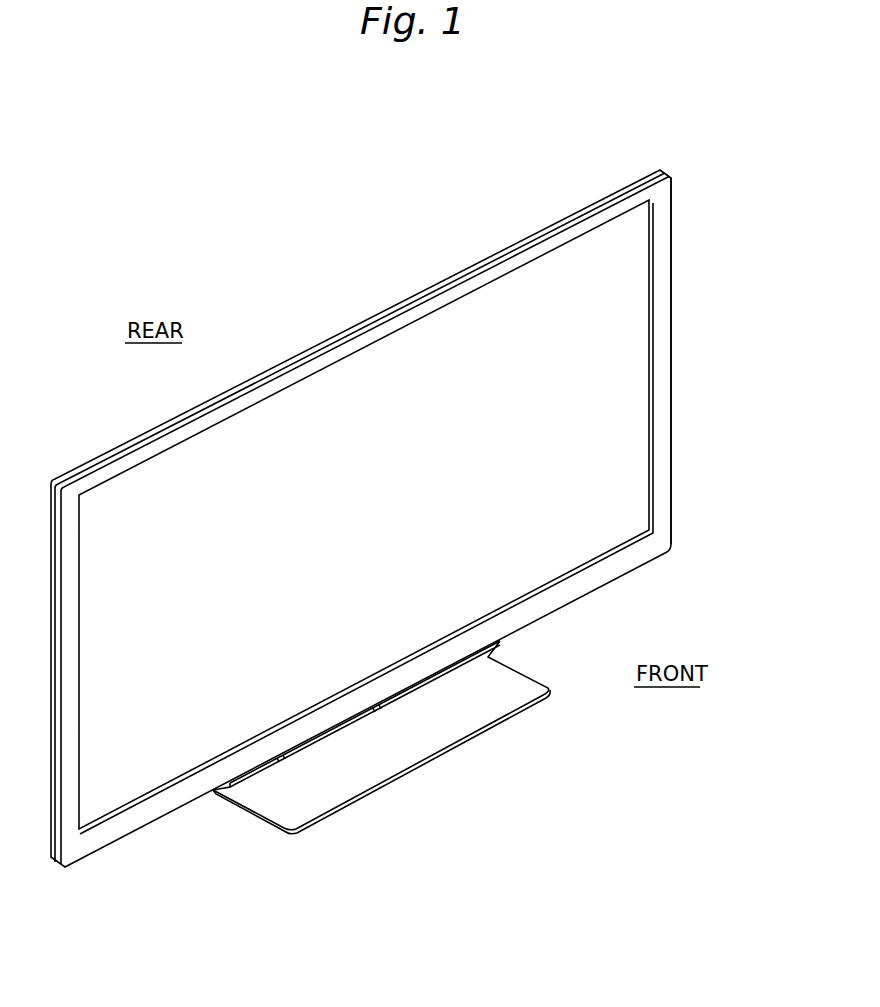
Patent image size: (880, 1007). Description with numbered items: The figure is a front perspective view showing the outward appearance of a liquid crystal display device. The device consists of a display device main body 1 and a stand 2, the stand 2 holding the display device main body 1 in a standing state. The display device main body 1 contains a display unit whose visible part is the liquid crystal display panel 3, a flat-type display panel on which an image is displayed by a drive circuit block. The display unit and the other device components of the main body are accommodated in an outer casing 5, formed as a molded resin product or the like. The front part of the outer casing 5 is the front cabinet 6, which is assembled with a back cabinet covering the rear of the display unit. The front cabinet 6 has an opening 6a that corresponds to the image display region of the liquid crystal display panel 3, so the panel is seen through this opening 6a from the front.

The display device main body 1 is at (390, 306).
The stand 2 is at (423, 752).
The liquid crystal display panel 3 is at (565, 567).
The outer casing 5 is at (671, 178).
The front cabinet 6 is at (671, 365).
The opening 6a is at (653, 230).